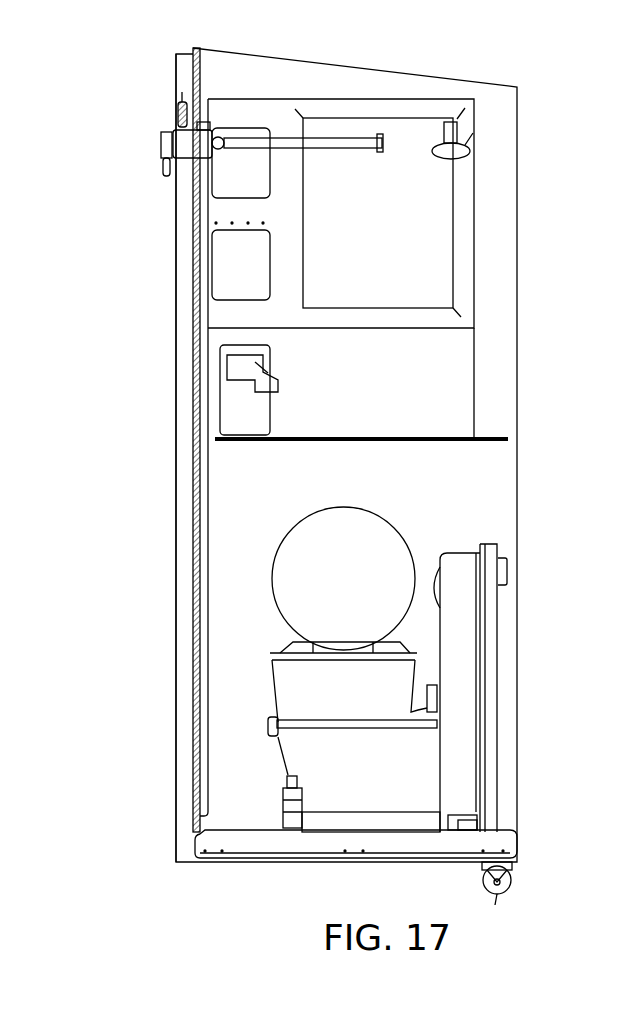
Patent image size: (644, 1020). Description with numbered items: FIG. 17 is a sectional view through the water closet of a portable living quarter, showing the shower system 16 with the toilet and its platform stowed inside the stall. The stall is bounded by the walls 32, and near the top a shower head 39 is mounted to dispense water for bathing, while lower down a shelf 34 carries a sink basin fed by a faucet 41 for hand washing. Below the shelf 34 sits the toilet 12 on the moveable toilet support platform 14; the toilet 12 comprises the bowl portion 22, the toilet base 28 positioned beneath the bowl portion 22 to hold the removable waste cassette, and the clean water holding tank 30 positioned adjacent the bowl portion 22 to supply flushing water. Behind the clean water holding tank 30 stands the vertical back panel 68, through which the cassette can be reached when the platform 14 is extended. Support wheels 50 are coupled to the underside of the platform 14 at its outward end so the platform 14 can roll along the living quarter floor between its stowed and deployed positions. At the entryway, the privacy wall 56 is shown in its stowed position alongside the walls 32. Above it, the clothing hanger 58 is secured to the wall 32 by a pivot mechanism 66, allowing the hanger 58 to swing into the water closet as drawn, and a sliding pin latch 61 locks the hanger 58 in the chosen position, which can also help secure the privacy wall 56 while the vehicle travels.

The toilet 12 is at (387, 512).
The moveable toilet support platform 14 is at (527, 832).
The shower system 16 is at (533, 128).
The bowl portion 22 is at (352, 689).
The toilet base 28 is at (377, 784).
The clean water holding tank 30 is at (463, 565).
The walls 32 is at (565, 402).
The shelf 34 is at (462, 440).
The shower head 39 is at (468, 133).
The faucet 41 is at (278, 378).
The support wheels 50 is at (497, 903).
The privacy wall 56 is at (208, 510).
The clothing hanger 58 is at (332, 152).
The sliding pin latch 61 is at (183, 100).
The pivot mechanism 66 is at (215, 121).
The back panel 68 is at (493, 636).